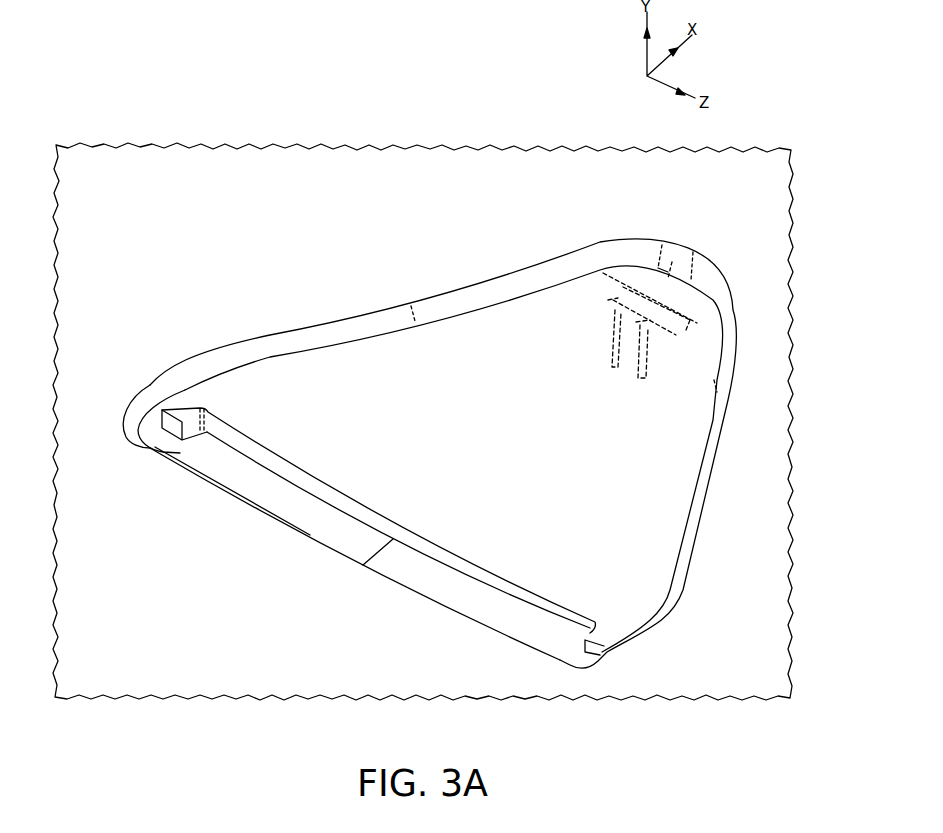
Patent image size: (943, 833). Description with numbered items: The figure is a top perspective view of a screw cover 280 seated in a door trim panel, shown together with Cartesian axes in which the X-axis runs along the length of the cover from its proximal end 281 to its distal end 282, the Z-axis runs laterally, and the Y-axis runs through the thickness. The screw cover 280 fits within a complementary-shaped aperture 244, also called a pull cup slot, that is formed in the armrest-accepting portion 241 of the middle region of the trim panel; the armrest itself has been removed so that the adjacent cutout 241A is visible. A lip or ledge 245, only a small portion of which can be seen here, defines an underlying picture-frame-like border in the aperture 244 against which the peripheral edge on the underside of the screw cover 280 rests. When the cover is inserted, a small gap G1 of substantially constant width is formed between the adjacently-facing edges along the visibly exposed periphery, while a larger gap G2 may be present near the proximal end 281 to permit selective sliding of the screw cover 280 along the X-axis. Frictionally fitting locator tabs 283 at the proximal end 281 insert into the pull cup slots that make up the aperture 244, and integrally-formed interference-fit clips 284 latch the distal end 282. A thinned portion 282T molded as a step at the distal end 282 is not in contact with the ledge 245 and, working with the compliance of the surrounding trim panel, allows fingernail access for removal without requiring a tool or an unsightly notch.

The armrest-accepting portion 241 is at (263, 265).
The cutout 241A is at (781, 262).
The aperture 244 is at (244, 486).
The ledge 245 is at (150, 418).
The screw cover 280 is at (539, 427).
The proximal end 281 is at (282, 548).
The distal end 282 is at (660, 200).
The thinned portion 282T is at (672, 262).
The locator tabs 283 is at (177, 455).
The clips 284 is at (667, 327).
The small gap G1 is at (470, 347).
The larger gap G2 is at (365, 566).